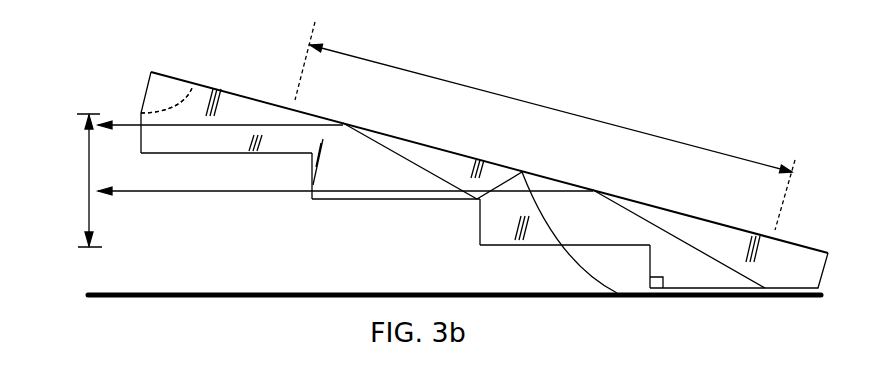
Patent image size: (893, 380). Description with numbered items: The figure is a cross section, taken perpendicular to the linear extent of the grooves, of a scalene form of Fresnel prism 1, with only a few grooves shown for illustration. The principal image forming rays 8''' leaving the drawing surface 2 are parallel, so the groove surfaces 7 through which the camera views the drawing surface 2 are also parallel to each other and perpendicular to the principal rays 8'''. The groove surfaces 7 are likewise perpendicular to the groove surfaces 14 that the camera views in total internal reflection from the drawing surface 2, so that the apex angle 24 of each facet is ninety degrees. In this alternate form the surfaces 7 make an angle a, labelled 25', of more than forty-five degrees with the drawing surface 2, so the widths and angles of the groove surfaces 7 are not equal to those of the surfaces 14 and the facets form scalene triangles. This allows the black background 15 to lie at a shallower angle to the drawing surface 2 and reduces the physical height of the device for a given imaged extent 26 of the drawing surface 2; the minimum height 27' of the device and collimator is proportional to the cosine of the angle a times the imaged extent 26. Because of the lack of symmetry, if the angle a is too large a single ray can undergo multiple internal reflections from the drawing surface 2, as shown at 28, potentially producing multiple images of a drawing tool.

The Fresnel prism 1 is at (228, 98).
The drawing surface 2 is at (432, 146).
The groove surfaces 7 is at (140, 151).
The groove surfaces 14 is at (227, 154).
The black background 15 is at (320, 289).
The apex angle 24 is at (650, 277).
The angle α 25' is at (187, 82).
The imaged extent of drawing surface 26 is at (677, 144).
The minimum height 27' is at (65, 180).
The multiple internal reflections 28 is at (522, 172).
The principal image forming rays 8''' is at (345, 154).
The angle α a is at (166, 107).